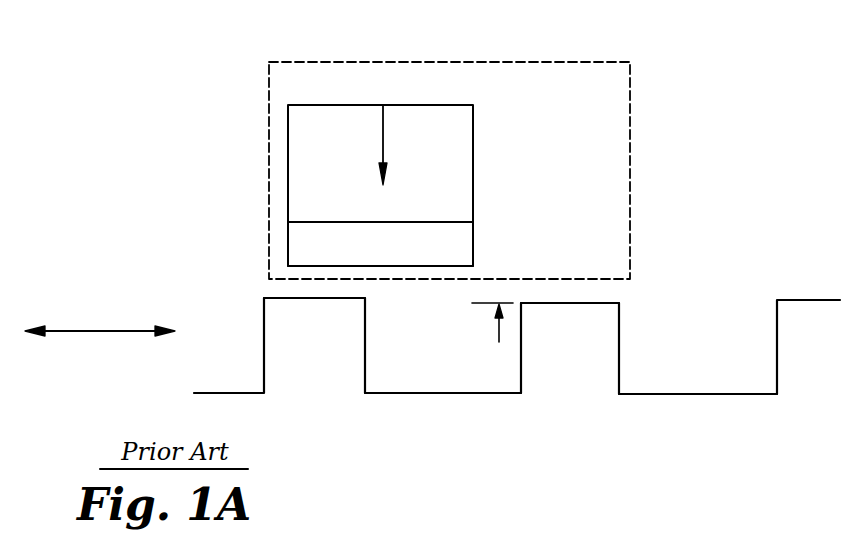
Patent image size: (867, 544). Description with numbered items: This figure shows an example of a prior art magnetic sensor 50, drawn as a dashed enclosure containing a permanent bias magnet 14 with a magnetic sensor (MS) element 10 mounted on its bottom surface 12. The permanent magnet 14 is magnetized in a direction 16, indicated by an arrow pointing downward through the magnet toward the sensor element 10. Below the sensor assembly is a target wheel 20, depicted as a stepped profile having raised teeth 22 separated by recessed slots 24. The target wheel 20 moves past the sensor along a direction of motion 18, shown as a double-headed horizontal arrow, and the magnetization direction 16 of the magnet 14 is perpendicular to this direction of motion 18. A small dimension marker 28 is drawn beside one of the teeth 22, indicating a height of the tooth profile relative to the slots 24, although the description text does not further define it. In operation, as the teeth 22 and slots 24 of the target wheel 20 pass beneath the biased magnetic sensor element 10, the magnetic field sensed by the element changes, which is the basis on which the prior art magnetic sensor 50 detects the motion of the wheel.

The magnetic sensor element 10 is at (362, 266).
The bottom surface 12 is at (455, 223).
The permanent magnet 14 is at (455, 105).
The magnetization direction 16 is at (383, 135).
The direction of motion 18 is at (102, 331).
The target wheel 20 is at (710, 308).
The teeth 22 is at (282, 298).
The slots 24 is at (398, 393).
The step height 28 is at (497, 292).
The magnetic sensor 50 is at (641, 123).